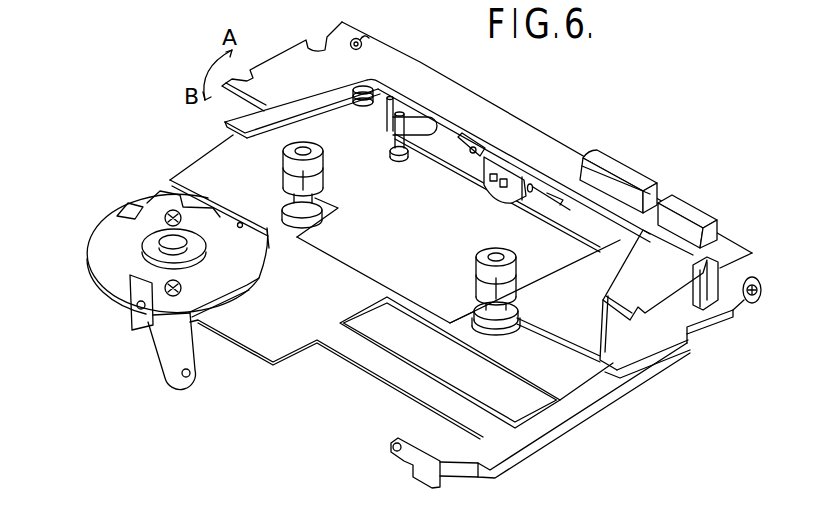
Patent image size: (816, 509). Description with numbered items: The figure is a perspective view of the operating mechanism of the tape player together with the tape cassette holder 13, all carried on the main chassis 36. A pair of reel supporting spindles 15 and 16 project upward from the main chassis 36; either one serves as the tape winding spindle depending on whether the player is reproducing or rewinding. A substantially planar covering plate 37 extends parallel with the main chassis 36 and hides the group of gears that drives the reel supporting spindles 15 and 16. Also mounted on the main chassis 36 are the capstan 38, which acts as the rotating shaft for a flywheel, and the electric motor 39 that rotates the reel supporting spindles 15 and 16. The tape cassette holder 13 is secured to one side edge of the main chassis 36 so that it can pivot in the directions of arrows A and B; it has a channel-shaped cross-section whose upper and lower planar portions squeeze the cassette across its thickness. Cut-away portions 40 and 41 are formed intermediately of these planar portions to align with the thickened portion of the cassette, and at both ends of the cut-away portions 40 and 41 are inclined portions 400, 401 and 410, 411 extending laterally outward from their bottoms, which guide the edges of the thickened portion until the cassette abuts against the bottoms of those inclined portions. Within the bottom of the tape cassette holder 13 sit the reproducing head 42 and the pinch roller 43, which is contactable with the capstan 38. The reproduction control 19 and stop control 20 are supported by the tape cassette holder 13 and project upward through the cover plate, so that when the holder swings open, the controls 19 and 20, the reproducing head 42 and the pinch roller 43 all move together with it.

The tape cassette holder 13 is at (512, 118).
The reel supporting spindle 15 is at (323, 177).
The reel supporting spindle 16 is at (482, 257).
The reproduction control 19 is at (698, 204).
The stop control 20 is at (633, 165).
The main chassis 36 is at (190, 170).
The covering plate 37 is at (335, 268).
The capstan 38 is at (397, 158).
The electric motor 39 is at (98, 232).
The cut-away portion 40 is at (640, 225).
The cut-away portion 41 is at (590, 262).
The reproducing head 42 is at (510, 197).
The pinch roller 43 is at (387, 133).
The inclined portion 400 is at (310, 103).
The inclined portion 401 is at (613, 277).
The inclined portion 410 is at (327, 128).
The inclined portion 411 is at (617, 337).